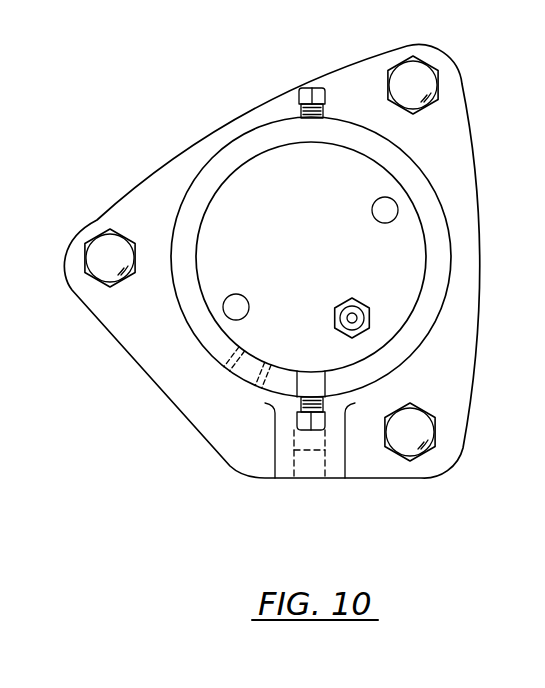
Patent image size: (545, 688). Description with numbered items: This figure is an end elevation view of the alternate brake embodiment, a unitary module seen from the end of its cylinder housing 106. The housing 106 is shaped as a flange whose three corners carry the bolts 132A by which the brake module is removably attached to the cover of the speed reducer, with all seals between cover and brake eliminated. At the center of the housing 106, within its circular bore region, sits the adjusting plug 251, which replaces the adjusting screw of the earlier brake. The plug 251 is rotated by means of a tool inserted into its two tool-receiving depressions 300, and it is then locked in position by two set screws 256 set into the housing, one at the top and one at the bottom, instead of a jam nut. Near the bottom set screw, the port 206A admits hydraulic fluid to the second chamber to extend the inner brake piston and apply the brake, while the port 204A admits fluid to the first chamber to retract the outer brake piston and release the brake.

The cylinder housing 106 is at (438, 196).
The bolts 132A is at (428, 76).
The set screws 256 is at (303, 88).
The tool-receiving depressions 300 is at (376, 205).
The adjusting plug 251 is at (326, 284).
The port 206A is at (296, 393).
The port 204A is at (328, 462).